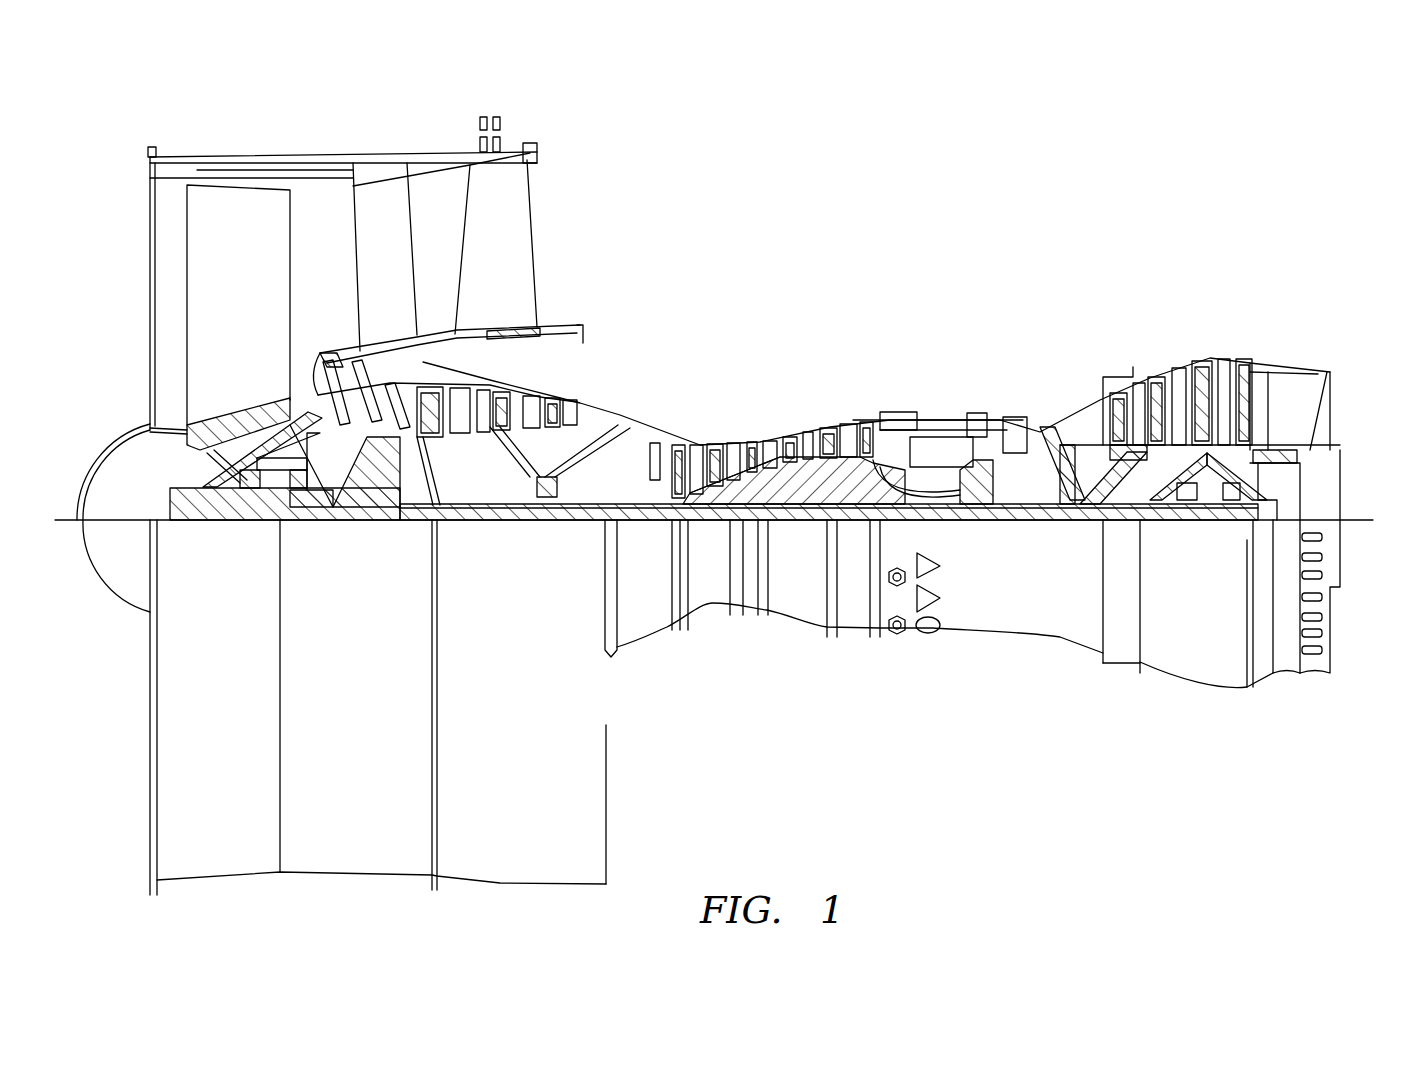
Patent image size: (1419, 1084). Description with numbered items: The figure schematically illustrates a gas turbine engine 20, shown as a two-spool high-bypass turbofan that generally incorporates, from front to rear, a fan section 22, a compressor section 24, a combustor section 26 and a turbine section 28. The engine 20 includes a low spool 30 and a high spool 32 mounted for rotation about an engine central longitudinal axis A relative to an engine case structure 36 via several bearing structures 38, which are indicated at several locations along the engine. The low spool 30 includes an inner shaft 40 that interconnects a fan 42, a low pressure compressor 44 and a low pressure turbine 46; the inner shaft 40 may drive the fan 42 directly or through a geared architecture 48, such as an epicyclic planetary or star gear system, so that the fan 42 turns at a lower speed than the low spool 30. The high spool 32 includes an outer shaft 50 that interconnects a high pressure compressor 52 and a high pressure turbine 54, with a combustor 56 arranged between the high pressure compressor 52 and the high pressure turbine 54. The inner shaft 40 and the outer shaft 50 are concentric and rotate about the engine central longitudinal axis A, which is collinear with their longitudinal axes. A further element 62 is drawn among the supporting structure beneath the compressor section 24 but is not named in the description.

The gas turbine engine 20 is at (1067, 212).
The fan section 22 is at (140, 128).
The compressor section 24 is at (440, 285).
The combustor section 26 is at (884, 285).
The turbine section 28 is at (1260, 285).
The low spool 30 is at (803, 527).
The high spool 32 is at (855, 452).
The engine case structure 36 is at (857, 633).
The bearing structures 38 is at (467, 588).
The inner shaft 40 is at (623, 520).
The fan 42 is at (218, 296).
The low pressure compressor 44 is at (522, 395).
The low pressure turbine 46 is at (1182, 380).
The geared architecture 48 is at (382, 490).
The outer shaft 50 is at (935, 490).
The high pressure compressor 52 is at (785, 490).
The high pressure turbine 54 is at (1023, 415).
The combustor 56 is at (943, 450).
The support strut 62 is at (687, 500).
The engine central longitudinal axis A is at (1368, 515).